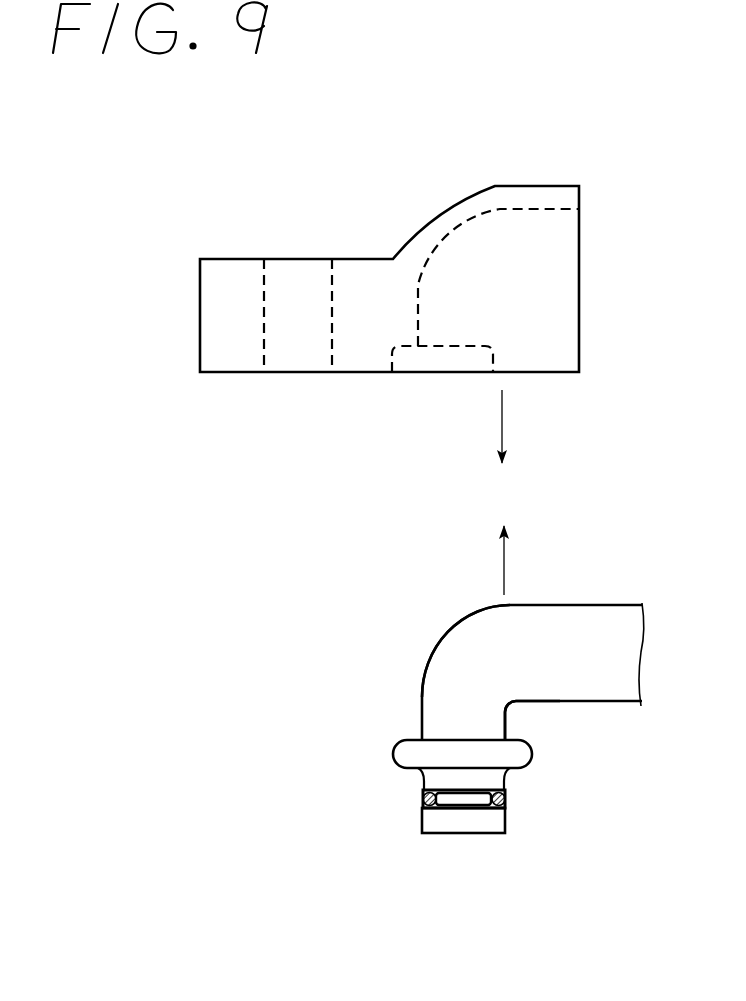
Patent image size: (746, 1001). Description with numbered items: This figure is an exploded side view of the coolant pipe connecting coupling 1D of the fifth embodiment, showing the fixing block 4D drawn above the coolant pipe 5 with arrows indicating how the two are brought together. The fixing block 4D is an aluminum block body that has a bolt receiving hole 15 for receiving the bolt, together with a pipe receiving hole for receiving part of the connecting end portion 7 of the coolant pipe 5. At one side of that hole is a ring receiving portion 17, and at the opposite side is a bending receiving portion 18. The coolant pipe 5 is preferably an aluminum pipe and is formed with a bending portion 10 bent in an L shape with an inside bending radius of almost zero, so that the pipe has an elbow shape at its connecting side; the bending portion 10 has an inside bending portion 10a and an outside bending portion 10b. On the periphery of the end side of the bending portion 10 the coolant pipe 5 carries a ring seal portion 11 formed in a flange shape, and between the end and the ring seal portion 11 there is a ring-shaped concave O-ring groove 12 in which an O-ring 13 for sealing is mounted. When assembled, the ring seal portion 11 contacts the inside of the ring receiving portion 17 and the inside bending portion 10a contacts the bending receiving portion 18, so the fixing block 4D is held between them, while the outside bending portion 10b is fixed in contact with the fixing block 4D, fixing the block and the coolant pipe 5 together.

The coolant pipe connecting coupling 1D is at (359, 273).
The fixing block 4D is at (215, 322).
The bolt receiving hole 15 is at (275, 374).
The ring receiving portion 17 is at (407, 374).
The bending receiving portion 18 is at (498, 230).
The bending portion 10 is at (517, 656).
The inside bending portion 10a is at (520, 701).
The outside bending portion 10b is at (435, 672).
The coolant pipe 5 is at (605, 605).
The ring seal portion 11 is at (533, 752).
The O-ring groove 12 is at (461, 796).
The O-ring 13 is at (419, 804).
The connecting end portion 7 is at (493, 834).